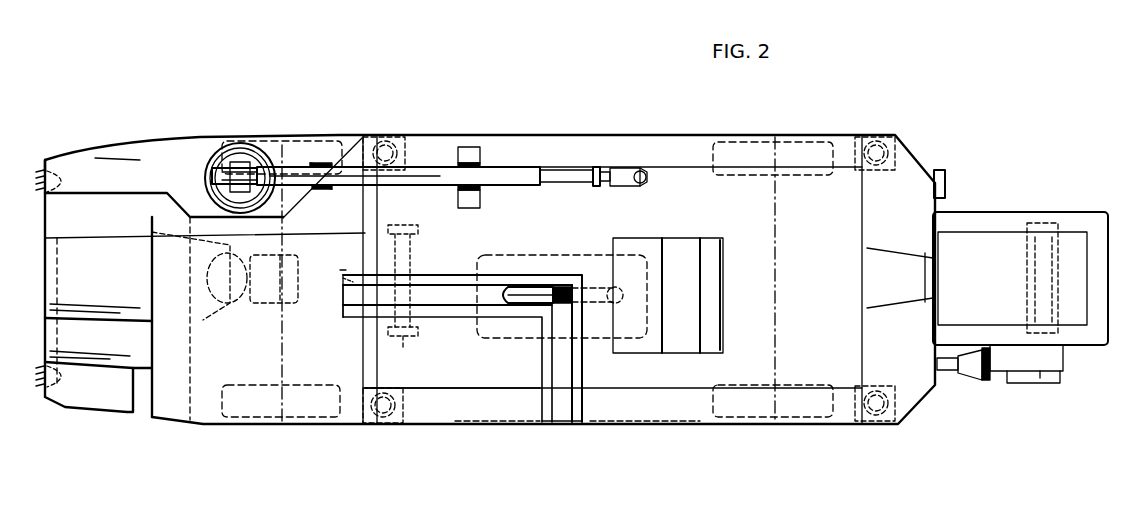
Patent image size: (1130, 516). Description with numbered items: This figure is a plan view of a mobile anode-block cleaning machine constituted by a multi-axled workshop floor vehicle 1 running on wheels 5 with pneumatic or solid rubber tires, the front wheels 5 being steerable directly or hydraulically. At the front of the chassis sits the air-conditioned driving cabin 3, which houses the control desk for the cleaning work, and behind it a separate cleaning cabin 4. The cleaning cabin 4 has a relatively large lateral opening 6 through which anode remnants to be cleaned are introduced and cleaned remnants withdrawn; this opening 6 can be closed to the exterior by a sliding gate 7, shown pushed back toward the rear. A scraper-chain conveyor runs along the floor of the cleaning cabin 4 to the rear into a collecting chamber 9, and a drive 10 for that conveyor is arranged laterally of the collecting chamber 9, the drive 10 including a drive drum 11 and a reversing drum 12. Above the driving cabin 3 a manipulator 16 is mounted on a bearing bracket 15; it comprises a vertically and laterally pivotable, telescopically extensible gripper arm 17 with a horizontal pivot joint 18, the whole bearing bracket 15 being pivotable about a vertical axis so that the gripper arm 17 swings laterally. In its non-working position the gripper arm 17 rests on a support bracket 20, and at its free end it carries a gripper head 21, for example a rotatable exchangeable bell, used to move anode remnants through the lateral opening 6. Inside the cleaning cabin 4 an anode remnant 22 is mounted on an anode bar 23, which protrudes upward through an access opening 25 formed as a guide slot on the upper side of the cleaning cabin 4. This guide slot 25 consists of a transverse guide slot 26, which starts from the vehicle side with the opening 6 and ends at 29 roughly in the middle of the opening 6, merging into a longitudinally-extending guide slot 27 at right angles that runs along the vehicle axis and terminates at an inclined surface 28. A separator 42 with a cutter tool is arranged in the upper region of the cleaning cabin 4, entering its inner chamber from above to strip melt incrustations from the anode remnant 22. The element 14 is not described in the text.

The vehicle 1 is at (338, 428).
The driving cabin 3 is at (210, 355).
The cleaning cabin 4 is at (437, 380).
The wheels 5 is at (305, 152).
The lateral opening 6 is at (497, 425).
The sliding gate 7 is at (652, 425).
The collecting chamber 9 is at (1007, 232).
The drive 10 is at (998, 367).
The drive drum 11 is at (1043, 270).
The reversing drum 12 is at (403, 340).
The exhaust 14 is at (946, 176).
The bearing bracket 15 is at (216, 162).
The manipulator 16 is at (420, 180).
The gripper arm 17 is at (523, 170).
The horizontal pivot joint 18 is at (241, 165).
The support bracket 20 is at (470, 147).
The gripper head 21 is at (637, 187).
The anode remnant 22 is at (507, 257).
The anode bar 23 is at (562, 287).
The access opening 25 is at (562, 380).
The transverse guide slot 26 is at (549, 351).
The longitudinally-extending guide slot 27 is at (432, 286).
The inclined surface 28 is at (352, 300).
The end of transverse guide slot 29 is at (563, 425).
The separator 42 is at (686, 243).